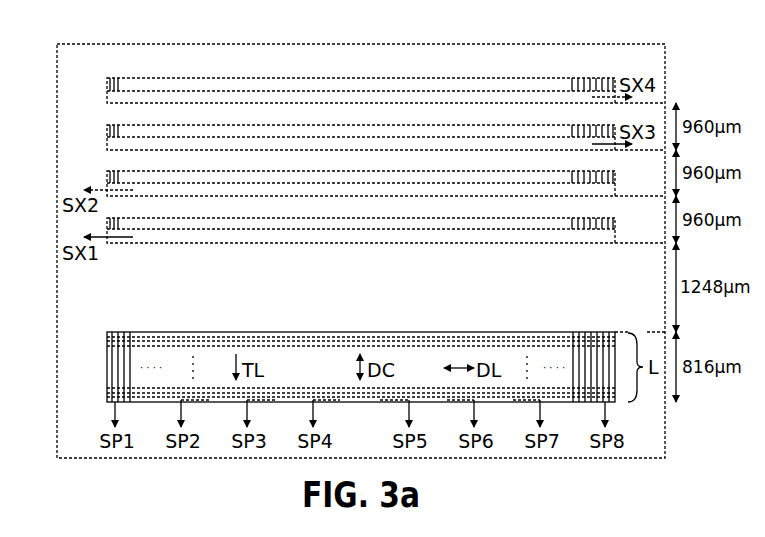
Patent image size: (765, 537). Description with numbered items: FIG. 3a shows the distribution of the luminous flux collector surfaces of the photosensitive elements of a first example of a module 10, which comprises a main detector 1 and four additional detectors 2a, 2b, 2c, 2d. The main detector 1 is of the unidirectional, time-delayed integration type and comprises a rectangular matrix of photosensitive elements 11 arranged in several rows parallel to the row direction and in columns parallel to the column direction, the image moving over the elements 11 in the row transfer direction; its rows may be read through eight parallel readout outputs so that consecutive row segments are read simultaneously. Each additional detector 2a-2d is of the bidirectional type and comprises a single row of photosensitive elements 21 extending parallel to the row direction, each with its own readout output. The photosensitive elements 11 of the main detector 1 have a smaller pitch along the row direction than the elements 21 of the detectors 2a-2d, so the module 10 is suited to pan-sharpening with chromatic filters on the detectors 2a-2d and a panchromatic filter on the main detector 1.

The main detector 1 is at (315, 378).
The module 10 is at (634, 44).
The photosensitive elements 11 is at (107, 335).
The photosensitive elements 21 is at (116, 126).
The additional detector 2a is at (107, 224).
The additional detector 2b is at (107, 177).
The additional detector 2c is at (107, 131).
The additional detector 2d is at (107, 84).